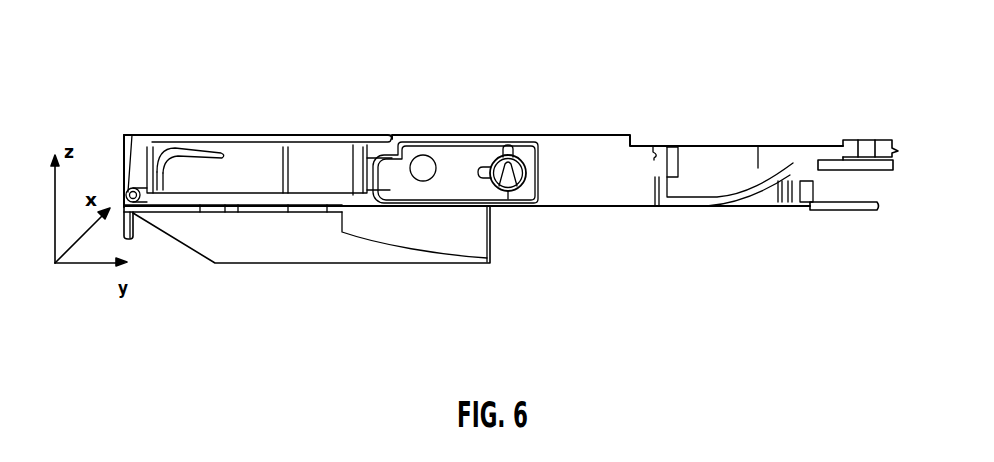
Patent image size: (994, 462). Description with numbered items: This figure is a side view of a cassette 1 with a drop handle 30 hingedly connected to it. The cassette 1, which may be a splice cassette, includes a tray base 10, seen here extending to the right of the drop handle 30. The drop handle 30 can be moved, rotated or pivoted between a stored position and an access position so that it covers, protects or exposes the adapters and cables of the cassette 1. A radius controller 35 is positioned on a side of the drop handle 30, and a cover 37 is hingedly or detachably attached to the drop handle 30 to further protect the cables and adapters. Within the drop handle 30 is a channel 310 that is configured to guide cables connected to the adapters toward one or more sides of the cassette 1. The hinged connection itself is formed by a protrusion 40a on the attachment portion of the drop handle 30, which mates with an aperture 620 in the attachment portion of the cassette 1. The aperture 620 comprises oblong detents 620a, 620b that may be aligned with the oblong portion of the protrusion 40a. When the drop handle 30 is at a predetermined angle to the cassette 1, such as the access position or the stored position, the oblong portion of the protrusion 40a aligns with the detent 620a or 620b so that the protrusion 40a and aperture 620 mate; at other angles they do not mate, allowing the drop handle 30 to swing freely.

The cassette 1 is at (783, 119).
The tray base 10 is at (718, 207).
The drop handle 30 is at (122, 157).
The radius controller 35 is at (285, 253).
The cover 37 is at (275, 137).
The channel 310 is at (262, 165).
The protrusion 40a is at (524, 193).
The aperture 620 is at (507, 195).
The oblong detent 620a is at (481, 178).
The oblong detent 620b is at (510, 144).